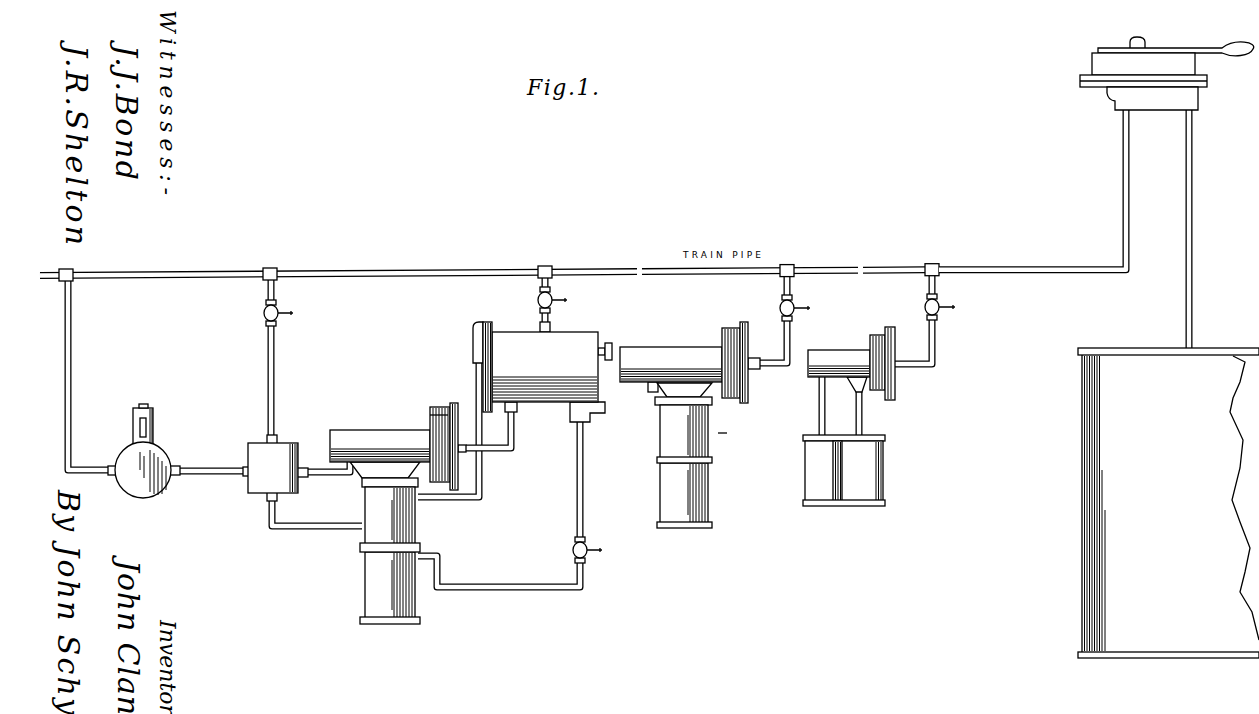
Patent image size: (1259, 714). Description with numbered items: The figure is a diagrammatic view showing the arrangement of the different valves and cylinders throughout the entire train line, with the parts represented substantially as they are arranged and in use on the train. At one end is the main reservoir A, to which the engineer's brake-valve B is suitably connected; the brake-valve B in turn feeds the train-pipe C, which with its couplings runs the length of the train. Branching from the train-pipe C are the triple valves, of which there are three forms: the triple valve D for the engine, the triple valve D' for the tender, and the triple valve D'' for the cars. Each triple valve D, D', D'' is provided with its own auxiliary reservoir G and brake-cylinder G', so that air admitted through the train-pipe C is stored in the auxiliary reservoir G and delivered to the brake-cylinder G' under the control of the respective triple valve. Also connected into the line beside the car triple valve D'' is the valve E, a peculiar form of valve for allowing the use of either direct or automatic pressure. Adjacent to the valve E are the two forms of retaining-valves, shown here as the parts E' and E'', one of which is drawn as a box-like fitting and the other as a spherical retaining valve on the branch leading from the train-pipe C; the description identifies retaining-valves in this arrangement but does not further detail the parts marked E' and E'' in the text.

The main reservoir A is at (1168, 503).
The engineer's brake-valve B is at (1124, 79).
The train-pipe C is at (997, 268).
The triple valve for the engine D is at (861, 356).
The triple valve for the tender D' is at (690, 353).
The triple valve for the cars D'' is at (390, 446).
The direct or automatic pressure valve E is at (484, 365).
The valve box E' is at (266, 484).
The retaining valve E'' is at (194, 479).
The auxiliary reservoir G is at (649, 472).
The brake-cylinder G' is at (552, 532).